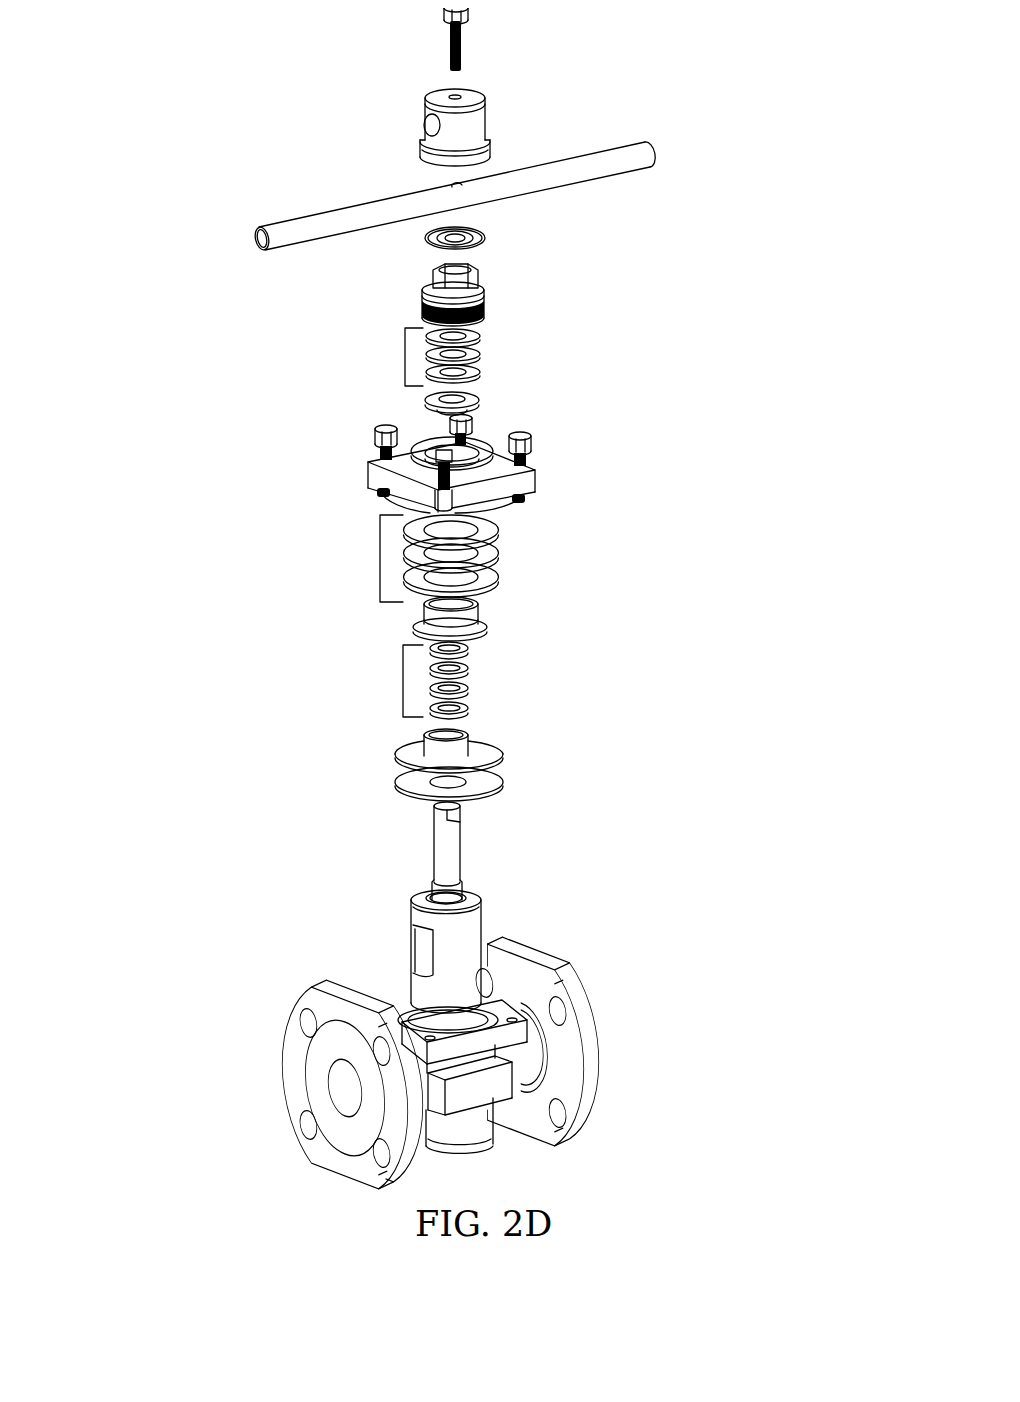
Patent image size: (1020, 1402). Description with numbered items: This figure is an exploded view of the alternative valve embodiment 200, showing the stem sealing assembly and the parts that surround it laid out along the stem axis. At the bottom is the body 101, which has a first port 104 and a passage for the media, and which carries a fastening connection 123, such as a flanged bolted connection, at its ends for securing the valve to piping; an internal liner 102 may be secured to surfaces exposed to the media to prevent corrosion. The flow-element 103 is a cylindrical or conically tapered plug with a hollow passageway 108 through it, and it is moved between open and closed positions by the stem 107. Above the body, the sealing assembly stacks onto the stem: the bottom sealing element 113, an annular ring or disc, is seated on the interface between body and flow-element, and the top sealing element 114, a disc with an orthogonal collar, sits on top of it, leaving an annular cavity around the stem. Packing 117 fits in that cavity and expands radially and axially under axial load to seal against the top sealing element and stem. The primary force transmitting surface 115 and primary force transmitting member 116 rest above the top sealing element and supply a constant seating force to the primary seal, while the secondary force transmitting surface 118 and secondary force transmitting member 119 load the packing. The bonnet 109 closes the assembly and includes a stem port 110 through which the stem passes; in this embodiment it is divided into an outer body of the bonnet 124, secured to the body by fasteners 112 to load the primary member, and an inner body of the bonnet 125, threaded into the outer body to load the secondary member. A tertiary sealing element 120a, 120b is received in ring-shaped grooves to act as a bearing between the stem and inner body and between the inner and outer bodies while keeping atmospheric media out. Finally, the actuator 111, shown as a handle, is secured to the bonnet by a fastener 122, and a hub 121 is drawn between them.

The valve 200 is at (630, 665).
The fastener 122 is at (445, 13).
The handle hub 121 is at (455, 127).
The actuator 111 is at (407, 197).
The tertiary sealing element 120a is at (428, 233).
The tertiary sealing element 120b is at (437, 247).
The inner body of the bonnet 125 is at (440, 298).
The secondary force transmitting member 119 is at (438, 355).
The secondary force transmitting surface 118 is at (440, 403).
The fasteners 112 is at (370, 438).
The outer body of the bonnet 124 is at (405, 470).
The stem port 110 is at (478, 452).
The bonnet 109 is at (505, 488).
The primary force transmitting member 116 is at (412, 556).
The primary force transmitting surface 115 is at (428, 627).
The packing 117 is at (440, 674).
The top sealing element 114 is at (414, 752).
The bottom sealing element 113 is at (414, 785).
The stem 107 is at (443, 838).
The flow-element 103 is at (418, 914).
The hollow passageway 108 is at (423, 945).
The body 101 is at (345, 1005).
The fastening connection 123 is at (313, 1025).
The liner 102 is at (340, 1043).
The first port 104 is at (348, 1088).